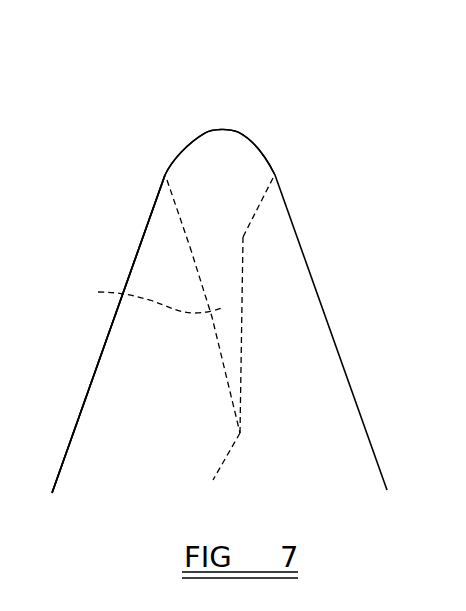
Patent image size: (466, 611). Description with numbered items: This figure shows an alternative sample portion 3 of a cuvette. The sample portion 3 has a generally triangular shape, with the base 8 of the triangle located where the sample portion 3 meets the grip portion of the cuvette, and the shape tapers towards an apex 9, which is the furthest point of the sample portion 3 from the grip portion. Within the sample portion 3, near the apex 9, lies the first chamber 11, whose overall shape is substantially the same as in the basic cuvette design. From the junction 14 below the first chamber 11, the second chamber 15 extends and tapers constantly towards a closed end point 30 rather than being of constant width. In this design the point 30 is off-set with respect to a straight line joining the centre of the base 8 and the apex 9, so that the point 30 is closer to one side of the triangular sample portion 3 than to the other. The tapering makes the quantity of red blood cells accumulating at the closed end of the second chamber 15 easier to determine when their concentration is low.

The apex 9 is at (227, 126).
The sample portion 3 is at (90, 385).
The first chamber 11 is at (220, 188).
The junction 14 is at (218, 326).
The second chamber 15 is at (142, 295).
The point 30 is at (213, 480).
The base 8 is at (139, 455).